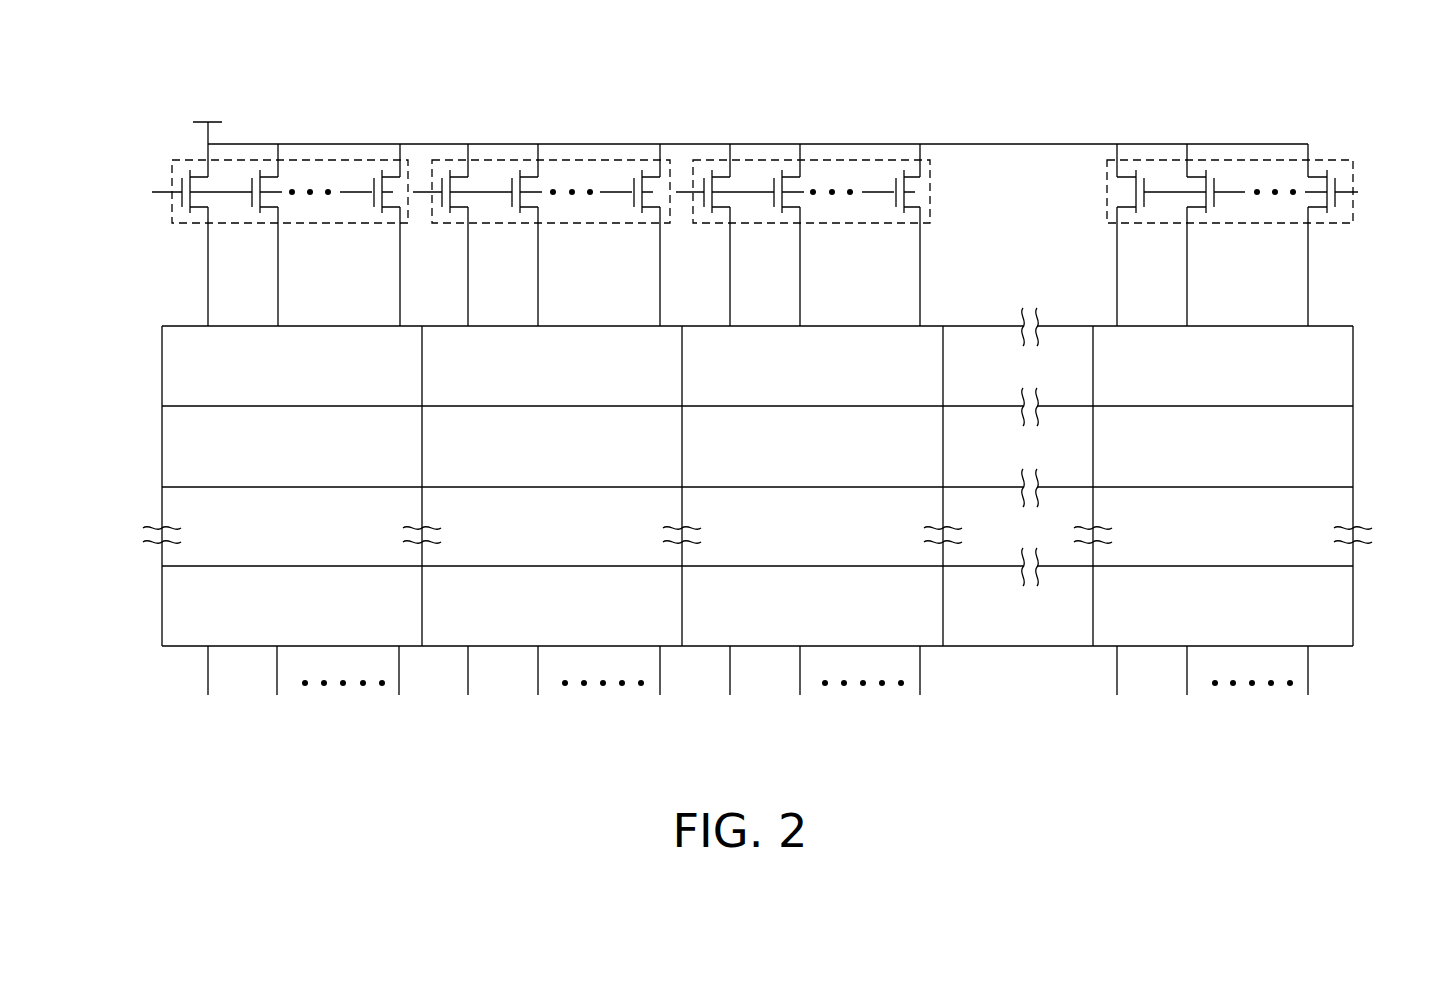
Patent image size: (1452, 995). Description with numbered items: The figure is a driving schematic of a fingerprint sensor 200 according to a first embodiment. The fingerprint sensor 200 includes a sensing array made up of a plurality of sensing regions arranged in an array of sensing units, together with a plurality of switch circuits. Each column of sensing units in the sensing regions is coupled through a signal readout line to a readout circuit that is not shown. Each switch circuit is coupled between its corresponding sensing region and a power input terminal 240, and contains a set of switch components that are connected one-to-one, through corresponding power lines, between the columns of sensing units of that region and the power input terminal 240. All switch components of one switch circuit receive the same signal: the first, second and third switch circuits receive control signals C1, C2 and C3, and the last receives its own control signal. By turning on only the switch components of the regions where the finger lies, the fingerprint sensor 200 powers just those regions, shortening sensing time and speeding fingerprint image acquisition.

The fingerprint sensor 200 is at (1363, 789).
The power input terminal 240 is at (200, 118).
The control signal C1 is at (162, 188).
The control signal C2 is at (420, 188).
The control signal C3 is at (683, 187).